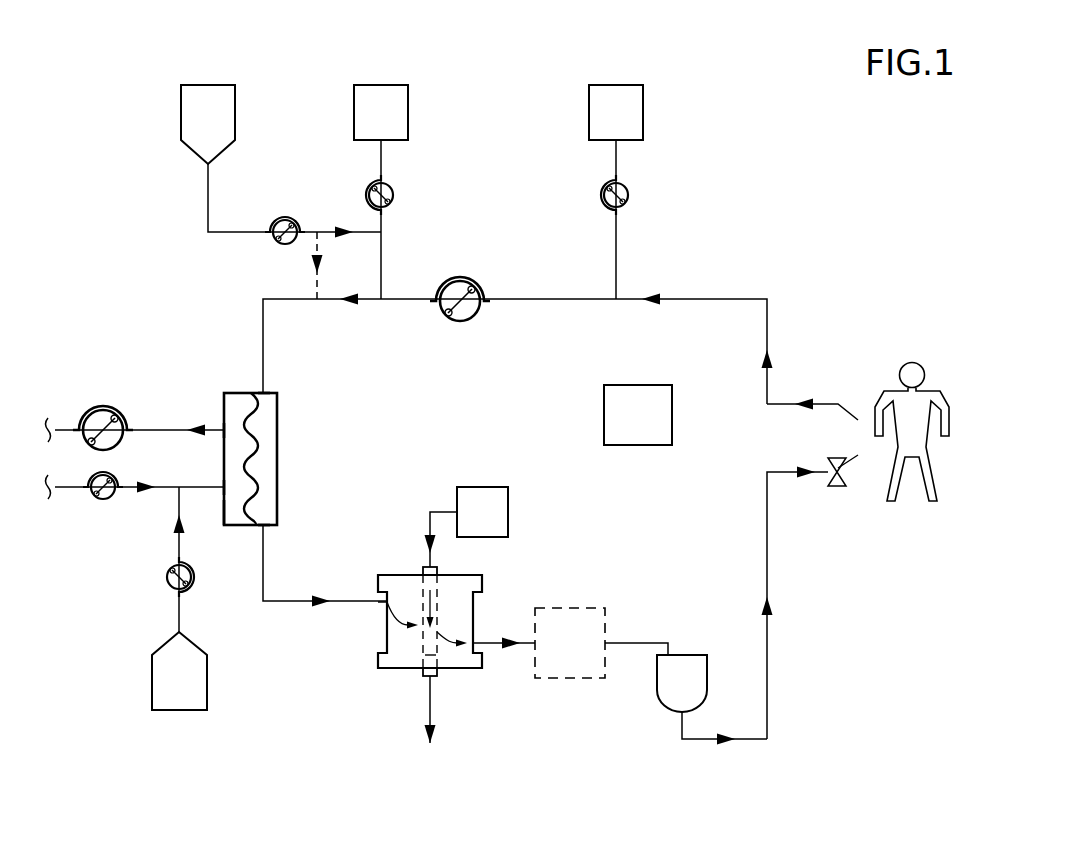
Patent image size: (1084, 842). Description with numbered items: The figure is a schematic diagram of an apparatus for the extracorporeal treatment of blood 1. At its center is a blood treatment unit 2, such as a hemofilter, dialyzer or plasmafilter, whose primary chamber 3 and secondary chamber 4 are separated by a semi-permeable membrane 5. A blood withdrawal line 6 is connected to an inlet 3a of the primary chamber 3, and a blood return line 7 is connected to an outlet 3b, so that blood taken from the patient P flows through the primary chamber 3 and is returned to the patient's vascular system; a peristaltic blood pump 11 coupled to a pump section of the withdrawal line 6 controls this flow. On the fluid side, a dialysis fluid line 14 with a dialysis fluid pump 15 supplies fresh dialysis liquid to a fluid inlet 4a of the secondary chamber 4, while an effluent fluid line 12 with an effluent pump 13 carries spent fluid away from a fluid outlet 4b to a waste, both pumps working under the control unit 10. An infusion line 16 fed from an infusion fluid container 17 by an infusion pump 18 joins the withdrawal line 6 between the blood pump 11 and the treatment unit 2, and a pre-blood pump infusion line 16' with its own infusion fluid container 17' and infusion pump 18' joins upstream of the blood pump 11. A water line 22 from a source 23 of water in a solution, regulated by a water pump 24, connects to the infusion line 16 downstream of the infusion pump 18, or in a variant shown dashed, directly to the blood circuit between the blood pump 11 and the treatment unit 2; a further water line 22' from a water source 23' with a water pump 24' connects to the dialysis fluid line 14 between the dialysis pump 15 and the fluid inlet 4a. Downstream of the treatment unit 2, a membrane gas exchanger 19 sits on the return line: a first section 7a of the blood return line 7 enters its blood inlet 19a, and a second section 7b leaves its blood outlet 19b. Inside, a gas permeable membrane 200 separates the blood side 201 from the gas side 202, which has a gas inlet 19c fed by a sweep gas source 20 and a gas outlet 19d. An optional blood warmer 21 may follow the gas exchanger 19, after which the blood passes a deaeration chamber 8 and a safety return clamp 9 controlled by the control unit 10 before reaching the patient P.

The apparatus for the extracorporeal treatment of blood 1 is at (880, 180).
The blood treatment unit 2 is at (290, 410).
The primary chamber 3 is at (268, 455).
The inlet of the primary chamber 3a is at (265, 393).
The outlet of the primary chamber 3b is at (263, 527).
The secondary chamber 4 is at (236, 513).
The fluid inlet of the secondary chamber 4a is at (226, 487).
The fluid outlet of the secondary chamber 4b is at (222, 430).
The semi-permeable membrane 5 is at (256, 483).
The blood withdrawal line 6 is at (733, 299).
The blood return line 7 is at (782, 660).
The first section of the blood return line 7a is at (283, 601).
The second section of the blood return line 7b is at (752, 739).
The deaeration chamber 8 is at (660, 695).
The safety return clamp 9 is at (835, 488).
The control unit 10 is at (672, 412).
The blood pump 11 is at (478, 322).
The effluent fluid line 12 is at (160, 430).
The effluent pump 13 is at (100, 410).
The dialysis fluid line 14 is at (130, 490).
The dialysis fluid pump 15 is at (100, 498).
The infusion line 16 is at (415, 215).
The pre-blood pump infusion line 16' is at (625, 218).
The infusion fluid container 17 is at (409, 93).
The infusion fluid container 17' is at (577, 96).
The infusion pump 18 is at (415, 198).
The infusion pump 18' is at (585, 205).
The membrane gas exchanger 19 is at (372, 680).
The blood inlet 19a is at (388, 603).
The blood outlet 19b is at (478, 642).
The gas inlet 19c is at (430, 567).
The gas outlet 19d is at (432, 680).
The sweep gas source 20 is at (485, 487).
The blood warmer 21 is at (590, 680).
The water line 22 is at (294, 217).
The further water line 22' is at (143, 578).
The source of water in a solution 23 is at (167, 109).
The water source 23' is at (170, 713).
The water pump 24 is at (284, 189).
The water pump 24' is at (143, 592).
The gas permeable membrane 200 is at (412, 600).
The blood side 201 is at (405, 645).
The gas side 202 is at (450, 655).
The patient P is at (928, 455).